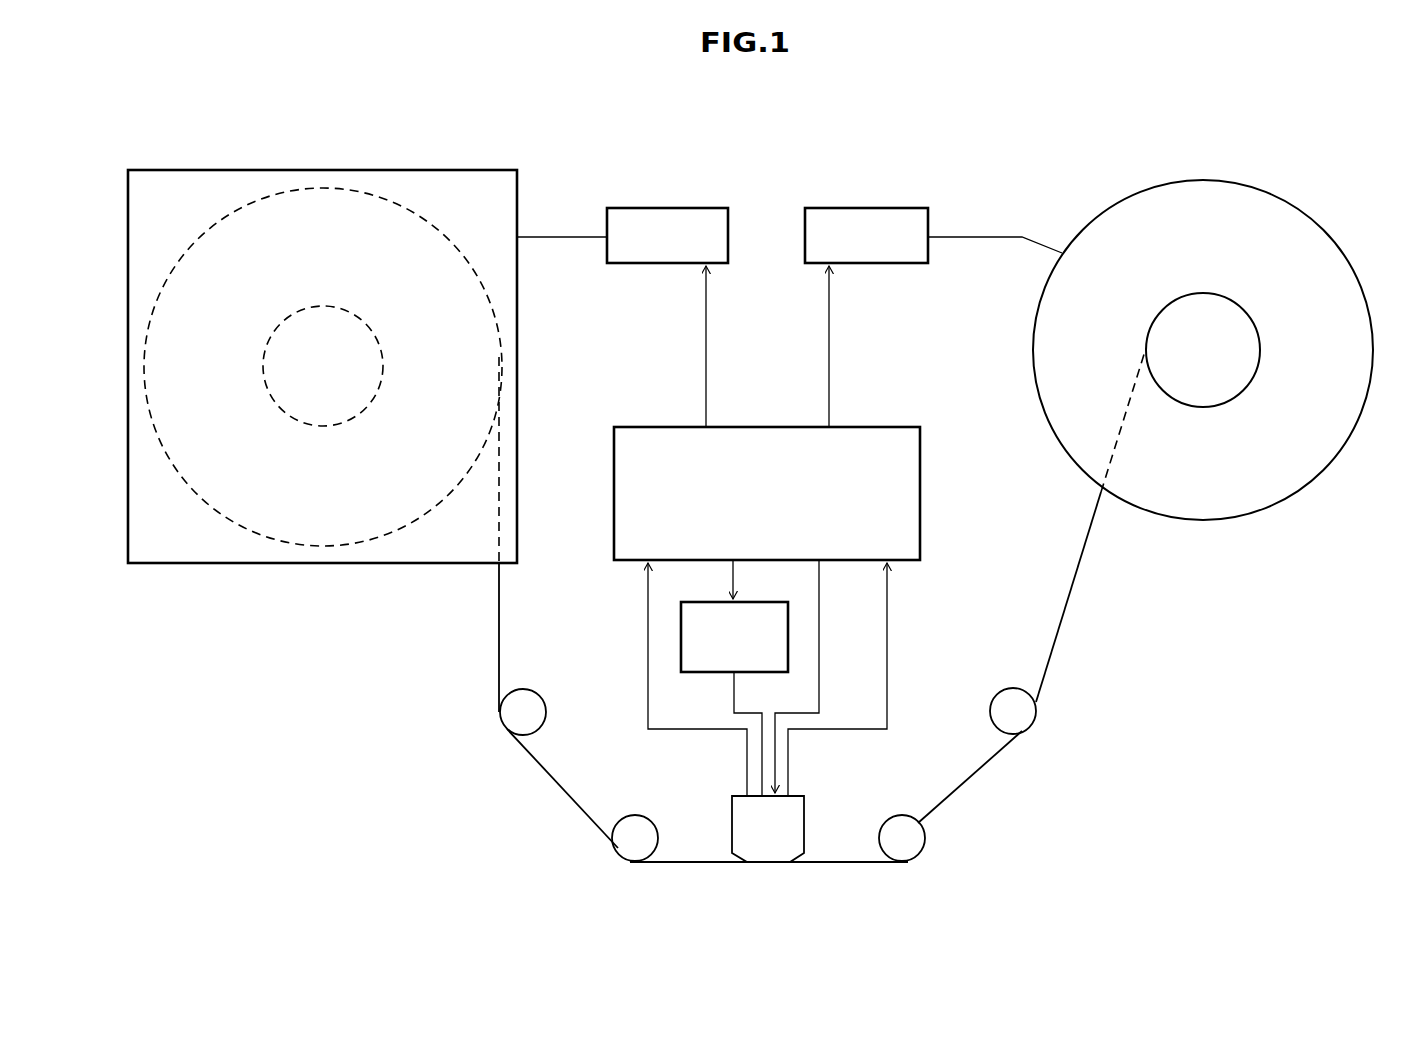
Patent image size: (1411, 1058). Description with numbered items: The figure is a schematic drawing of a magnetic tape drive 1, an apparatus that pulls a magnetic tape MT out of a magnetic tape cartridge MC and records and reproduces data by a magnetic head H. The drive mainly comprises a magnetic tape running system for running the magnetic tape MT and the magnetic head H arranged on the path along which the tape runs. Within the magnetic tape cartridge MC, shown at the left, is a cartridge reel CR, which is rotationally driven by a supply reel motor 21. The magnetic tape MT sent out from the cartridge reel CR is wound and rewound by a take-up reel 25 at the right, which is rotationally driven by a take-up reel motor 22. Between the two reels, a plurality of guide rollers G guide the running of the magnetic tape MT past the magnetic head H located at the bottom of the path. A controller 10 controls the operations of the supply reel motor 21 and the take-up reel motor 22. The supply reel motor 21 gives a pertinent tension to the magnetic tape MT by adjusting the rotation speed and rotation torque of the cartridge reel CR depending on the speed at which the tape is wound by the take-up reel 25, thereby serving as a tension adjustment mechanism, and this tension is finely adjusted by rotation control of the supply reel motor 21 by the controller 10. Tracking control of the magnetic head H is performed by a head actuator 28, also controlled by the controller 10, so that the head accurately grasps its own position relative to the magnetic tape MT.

The magnetic tape drive 1 is at (840, 120).
The magnetic tape cartridge MC is at (205, 170).
The cartridge reel CR is at (388, 200).
The magnetic tape MT is at (499, 610).
The guide roller G is at (525, 690).
The supply reel motor 21 is at (620, 208).
The take-up reel motor 22 is at (880, 208).
The take-up reel 25 is at (1148, 185).
The controller 10 is at (878, 421).
The head actuator 28 is at (750, 607).
The magnetic head H is at (804, 808).